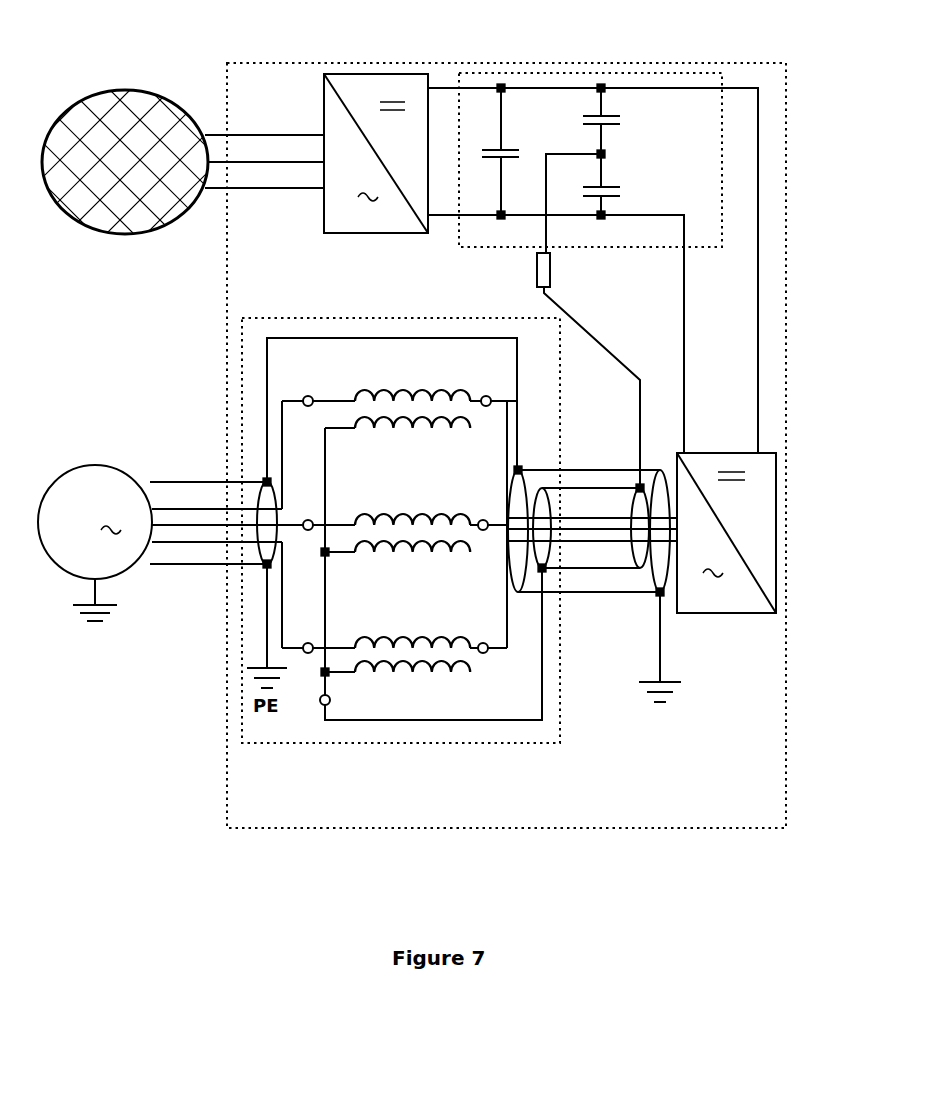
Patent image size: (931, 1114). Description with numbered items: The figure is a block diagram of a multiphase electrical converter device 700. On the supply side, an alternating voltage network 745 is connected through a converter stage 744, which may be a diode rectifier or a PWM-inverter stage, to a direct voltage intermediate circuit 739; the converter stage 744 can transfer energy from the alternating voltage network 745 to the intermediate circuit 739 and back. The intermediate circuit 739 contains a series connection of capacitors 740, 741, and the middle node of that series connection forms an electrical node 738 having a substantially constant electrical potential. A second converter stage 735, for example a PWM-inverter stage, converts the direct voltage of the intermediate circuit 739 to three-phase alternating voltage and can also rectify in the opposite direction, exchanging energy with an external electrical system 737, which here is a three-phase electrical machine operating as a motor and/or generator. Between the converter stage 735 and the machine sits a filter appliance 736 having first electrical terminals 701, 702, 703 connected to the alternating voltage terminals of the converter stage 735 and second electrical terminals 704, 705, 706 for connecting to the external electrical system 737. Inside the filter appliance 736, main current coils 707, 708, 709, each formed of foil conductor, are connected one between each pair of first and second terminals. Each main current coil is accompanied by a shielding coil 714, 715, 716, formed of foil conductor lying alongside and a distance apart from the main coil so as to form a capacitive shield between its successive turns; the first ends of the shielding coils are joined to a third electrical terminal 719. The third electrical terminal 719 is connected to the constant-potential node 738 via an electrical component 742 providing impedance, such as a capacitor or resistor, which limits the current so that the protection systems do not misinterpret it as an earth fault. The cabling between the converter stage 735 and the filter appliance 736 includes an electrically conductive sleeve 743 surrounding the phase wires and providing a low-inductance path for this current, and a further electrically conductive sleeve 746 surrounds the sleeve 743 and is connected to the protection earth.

The multiphase electrical converter device 700 is at (468, 63).
The first electrical terminal 701 is at (486, 396).
The first electrical terminal 702 is at (483, 520).
The first electrical terminal 703 is at (483, 643).
The second electrical terminal 704 is at (308, 396).
The second electrical terminal 705 is at (307, 520).
The second electrical terminal 706 is at (307, 643).
The main current coil 707 is at (402, 380).
The main current coil 708 is at (388, 504).
The main current coil 709 is at (382, 624).
The shielding coil 714 is at (370, 420).
The shielding coil 715 is at (392, 545).
The shielding coil 716 is at (446, 660).
The third electrical terminal 719 is at (330, 700).
The converter stage 735 is at (710, 616).
The filter appliance 736 is at (404, 746).
The external electrical system 737 is at (98, 465).
The electrical node 738 is at (606, 152).
The direct voltage intermediate circuit 739 is at (645, 248).
The capacitor 740 is at (620, 118).
The capacitor 741 is at (620, 192).
The electrical component 742 is at (537, 262).
The electrically conductive sleeve 743 is at (602, 570).
The converter stage 744 is at (345, 236).
The alternating voltage network 745 is at (128, 90).
The electrically conductive sleeve 746 is at (600, 470).